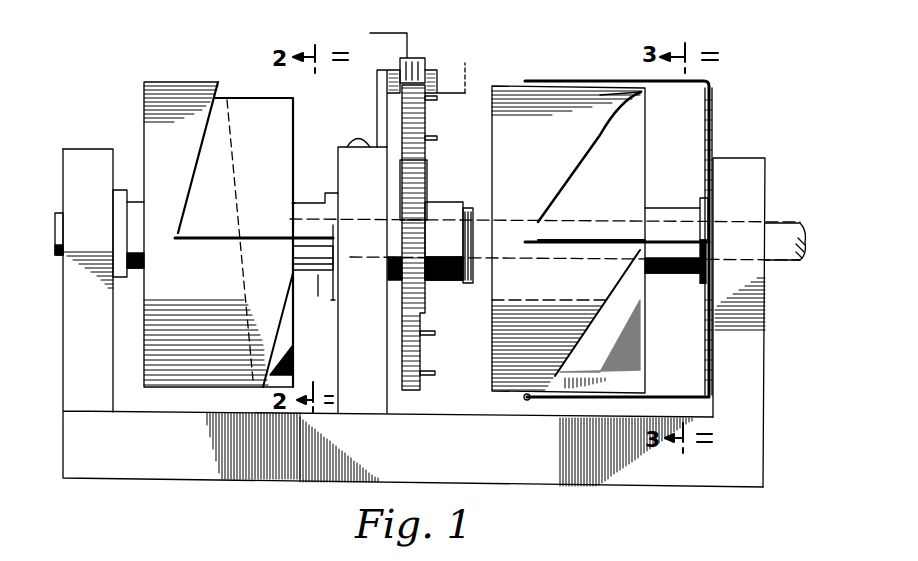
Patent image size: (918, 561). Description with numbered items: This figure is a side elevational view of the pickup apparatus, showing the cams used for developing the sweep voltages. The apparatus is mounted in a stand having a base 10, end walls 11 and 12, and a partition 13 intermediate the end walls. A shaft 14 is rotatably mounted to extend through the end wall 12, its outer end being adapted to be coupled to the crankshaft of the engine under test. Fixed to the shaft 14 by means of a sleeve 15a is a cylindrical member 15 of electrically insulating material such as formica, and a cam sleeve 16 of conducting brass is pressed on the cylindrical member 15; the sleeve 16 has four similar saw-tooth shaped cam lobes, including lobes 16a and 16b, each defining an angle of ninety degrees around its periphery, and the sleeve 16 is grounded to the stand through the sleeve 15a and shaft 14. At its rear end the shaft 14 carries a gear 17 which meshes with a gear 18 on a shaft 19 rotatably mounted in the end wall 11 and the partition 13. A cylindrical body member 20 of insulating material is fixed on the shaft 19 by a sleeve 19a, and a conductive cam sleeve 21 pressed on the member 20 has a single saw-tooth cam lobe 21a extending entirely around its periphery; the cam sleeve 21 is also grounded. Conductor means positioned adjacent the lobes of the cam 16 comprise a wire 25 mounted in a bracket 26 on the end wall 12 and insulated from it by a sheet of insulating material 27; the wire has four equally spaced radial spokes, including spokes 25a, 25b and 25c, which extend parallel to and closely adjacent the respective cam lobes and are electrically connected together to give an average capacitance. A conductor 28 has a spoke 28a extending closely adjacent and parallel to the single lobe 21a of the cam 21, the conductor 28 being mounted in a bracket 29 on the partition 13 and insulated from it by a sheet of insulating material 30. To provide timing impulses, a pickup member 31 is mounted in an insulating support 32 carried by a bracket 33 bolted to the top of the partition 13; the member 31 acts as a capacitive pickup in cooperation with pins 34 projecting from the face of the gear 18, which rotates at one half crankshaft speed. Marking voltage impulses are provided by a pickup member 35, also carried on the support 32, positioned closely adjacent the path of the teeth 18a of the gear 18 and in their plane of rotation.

The base 10 is at (185, 470).
The end wall 11 is at (70, 305).
The end wall 12 is at (760, 340).
The partition 13 is at (345, 165).
The shaft 14 is at (330, 236).
The cylindrical member 15 is at (630, 162).
The sleeve 15a is at (665, 214).
The cam sleeve 16 is at (508, 86).
The cam lobe 16a is at (605, 95).
The cam lobe 16b is at (608, 312).
The gear 17 is at (428, 178).
The gear 18 is at (421, 355).
The gear teeth 18a is at (427, 152).
The shaft 19 is at (58, 214).
The sleeve 19a is at (302, 203).
The cylindrical body member 20 is at (238, 96).
The cam sleeve 21 is at (145, 135).
The cam lobe 21a is at (292, 345).
The wire 25 is at (712, 144).
The radial spoke 25a is at (684, 86).
The radial spoke 25b is at (540, 248).
The radial spoke 25c is at (525, 398).
The bracket 26 is at (713, 256).
The sheet of insulating material 27 is at (702, 328).
The conductor 28 is at (318, 296).
The spoke 28a is at (205, 240).
The bracket 29 is at (335, 270).
The sheet of insulating material 30 is at (335, 300).
The pickup member 31 is at (439, 82).
The insulating support 32 is at (432, 62).
The bracket 33 is at (378, 108).
The pins 34 is at (438, 137).
The pickup member 35 is at (415, 58).